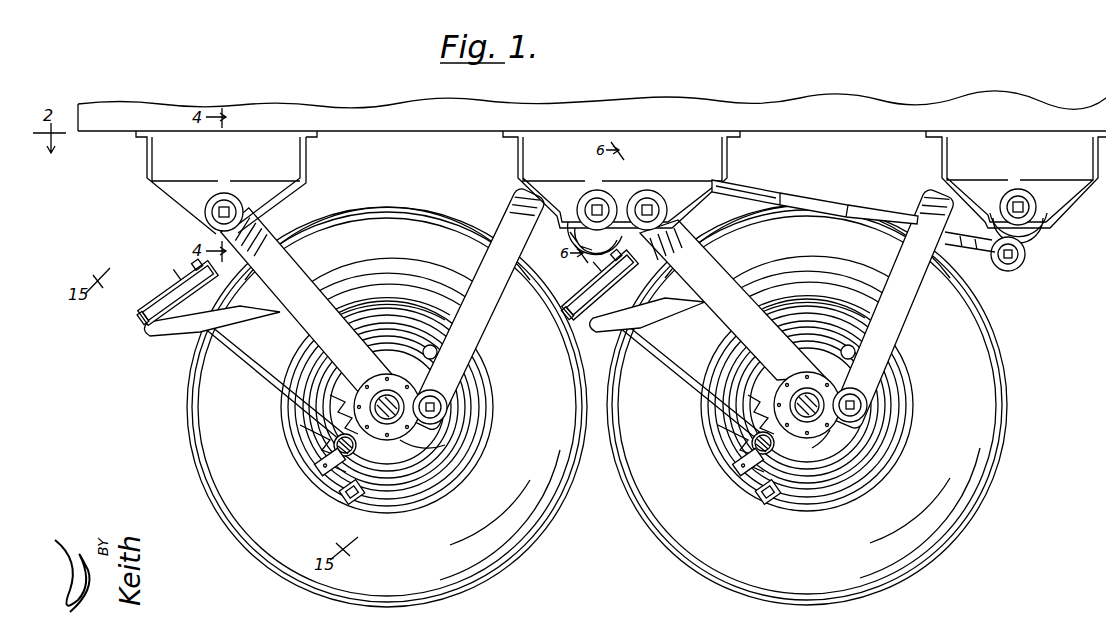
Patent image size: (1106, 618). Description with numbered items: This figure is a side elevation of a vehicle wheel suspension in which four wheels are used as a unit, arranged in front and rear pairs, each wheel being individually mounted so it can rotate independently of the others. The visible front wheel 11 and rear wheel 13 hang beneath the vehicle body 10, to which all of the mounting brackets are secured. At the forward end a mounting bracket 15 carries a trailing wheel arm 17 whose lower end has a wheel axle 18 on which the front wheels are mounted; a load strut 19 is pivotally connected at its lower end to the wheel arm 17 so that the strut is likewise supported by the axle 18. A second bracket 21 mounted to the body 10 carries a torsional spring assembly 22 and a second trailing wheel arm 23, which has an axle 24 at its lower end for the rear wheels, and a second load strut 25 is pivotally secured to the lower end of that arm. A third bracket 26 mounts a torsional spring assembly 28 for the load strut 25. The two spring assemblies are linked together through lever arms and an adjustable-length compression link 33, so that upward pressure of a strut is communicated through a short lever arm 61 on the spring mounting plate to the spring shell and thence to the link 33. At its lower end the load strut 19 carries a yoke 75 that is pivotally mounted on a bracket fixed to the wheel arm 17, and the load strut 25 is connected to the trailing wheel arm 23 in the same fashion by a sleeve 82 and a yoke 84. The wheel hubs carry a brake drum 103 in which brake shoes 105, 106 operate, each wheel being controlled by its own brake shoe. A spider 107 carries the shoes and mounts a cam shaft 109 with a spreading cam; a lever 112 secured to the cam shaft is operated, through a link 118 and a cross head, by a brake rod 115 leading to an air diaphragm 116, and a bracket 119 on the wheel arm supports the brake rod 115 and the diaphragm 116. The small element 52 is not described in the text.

The body 10 is at (447, 116).
The wheel 11 is at (210, 440).
The wheel 13 is at (668, 520).
The mounting bracket 15 is at (286, 164).
The trailing wheel arm 17 is at (290, 283).
The wheel axle 18 is at (428, 440).
The load strut 19 is at (490, 260).
The bracket 21 is at (532, 160).
The torsional spring assembly 22 is at (560, 234).
The trailing wheel arm 23 is at (736, 258).
The axle 24 is at (825, 446).
The load strut 25 is at (900, 262).
The bracket 26 is at (955, 152).
The torsional spring assembly 28 is at (1028, 234).
The compression link 33 is at (768, 193).
The link bar 52 is at (985, 272).
The lever arm 61 is at (535, 204).
The yoke 75 is at (452, 407).
The sleeve 82 is at (812, 380).
The yoke 84 is at (872, 400).
The brake drum 103 is at (410, 492).
The brake shoe 105 is at (325, 364).
The brake shoe 106 is at (445, 450).
The spider 107 is at (440, 350).
The cam shaft 109 is at (352, 458).
The lever 112 is at (318, 468).
The brake rod 115 is at (248, 378).
The air diaphragm 116 is at (162, 290).
The link 118 is at (340, 496).
The bracket 119 is at (175, 340).